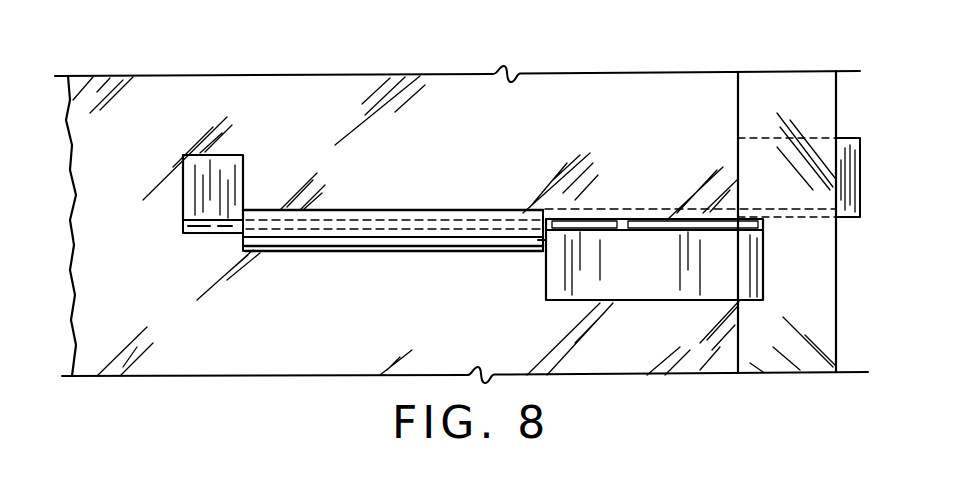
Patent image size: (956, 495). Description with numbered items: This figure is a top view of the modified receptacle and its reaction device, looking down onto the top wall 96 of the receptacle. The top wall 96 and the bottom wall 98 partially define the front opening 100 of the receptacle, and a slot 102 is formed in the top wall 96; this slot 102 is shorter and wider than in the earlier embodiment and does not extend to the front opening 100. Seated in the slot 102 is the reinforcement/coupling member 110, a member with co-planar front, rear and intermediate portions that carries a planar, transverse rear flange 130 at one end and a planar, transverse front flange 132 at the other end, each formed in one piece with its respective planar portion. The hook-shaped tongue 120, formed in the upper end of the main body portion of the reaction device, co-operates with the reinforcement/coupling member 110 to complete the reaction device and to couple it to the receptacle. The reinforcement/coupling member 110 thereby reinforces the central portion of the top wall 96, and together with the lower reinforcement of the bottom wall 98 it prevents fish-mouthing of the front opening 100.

The top wall 96 is at (637, 96).
The bottom wall 98 is at (803, 93).
The front opening 100 is at (792, 248).
The slot 102 is at (445, 210).
The reinforcement/coupling member 110 is at (539, 255).
The hook-shaped tongue 120 is at (323, 221).
The rear flange 130 is at (228, 163).
The front flange 132 is at (622, 268).